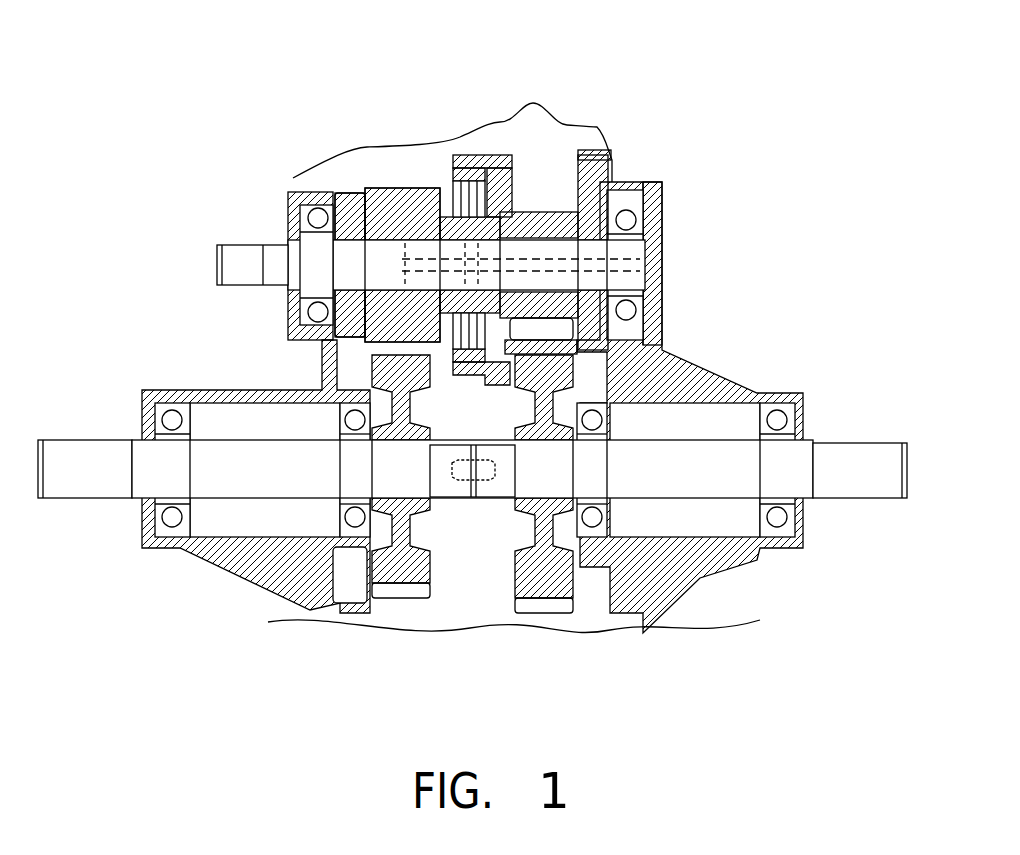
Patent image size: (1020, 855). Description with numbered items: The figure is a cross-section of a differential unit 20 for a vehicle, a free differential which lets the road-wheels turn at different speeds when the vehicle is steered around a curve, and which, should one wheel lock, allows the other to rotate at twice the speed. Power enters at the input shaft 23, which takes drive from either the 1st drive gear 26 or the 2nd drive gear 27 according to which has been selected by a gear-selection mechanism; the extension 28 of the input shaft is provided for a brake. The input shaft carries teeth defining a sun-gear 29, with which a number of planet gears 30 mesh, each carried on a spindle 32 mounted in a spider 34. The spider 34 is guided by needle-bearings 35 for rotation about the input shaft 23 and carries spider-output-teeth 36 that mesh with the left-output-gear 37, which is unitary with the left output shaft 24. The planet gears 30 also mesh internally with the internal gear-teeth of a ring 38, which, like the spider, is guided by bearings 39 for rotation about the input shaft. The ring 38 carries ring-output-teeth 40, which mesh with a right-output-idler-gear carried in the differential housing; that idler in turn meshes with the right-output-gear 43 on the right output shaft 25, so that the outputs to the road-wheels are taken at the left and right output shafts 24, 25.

The differential unit 20 is at (738, 165).
The input shaft 23 is at (383, 264).
The left output shaft 24 is at (262, 497).
The right output shaft 25 is at (683, 500).
The 1st drive gear 26 is at (340, 342).
The 2nd drive gear 27 is at (590, 162).
The extension of the input shaft 28 is at (255, 245).
The sun-gear 29 is at (480, 248).
The planet gears 30 is at (441, 178).
The spindles 32 is at (468, 203).
The spider 34 is at (387, 200).
The needle-bearings 35 is at (340, 190).
The spider-output-teeth 36 is at (407, 182).
The left-output-gear 37 is at (397, 600).
The ring 38 is at (512, 177).
The bearings 39 is at (565, 226).
The ring-output-teeth 40 is at (488, 368).
The right-output-gear 43 is at (548, 612).